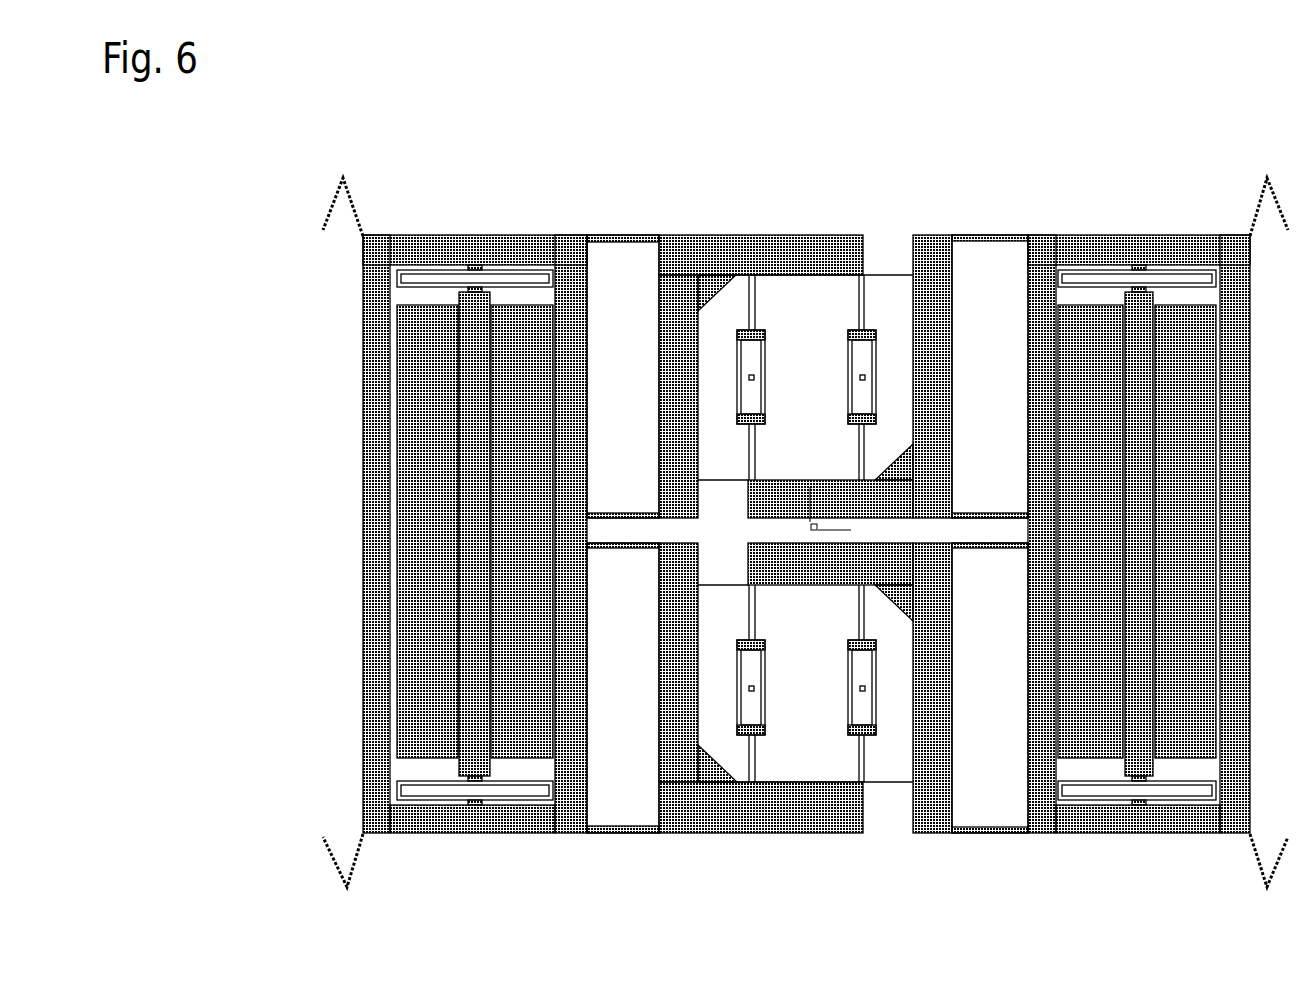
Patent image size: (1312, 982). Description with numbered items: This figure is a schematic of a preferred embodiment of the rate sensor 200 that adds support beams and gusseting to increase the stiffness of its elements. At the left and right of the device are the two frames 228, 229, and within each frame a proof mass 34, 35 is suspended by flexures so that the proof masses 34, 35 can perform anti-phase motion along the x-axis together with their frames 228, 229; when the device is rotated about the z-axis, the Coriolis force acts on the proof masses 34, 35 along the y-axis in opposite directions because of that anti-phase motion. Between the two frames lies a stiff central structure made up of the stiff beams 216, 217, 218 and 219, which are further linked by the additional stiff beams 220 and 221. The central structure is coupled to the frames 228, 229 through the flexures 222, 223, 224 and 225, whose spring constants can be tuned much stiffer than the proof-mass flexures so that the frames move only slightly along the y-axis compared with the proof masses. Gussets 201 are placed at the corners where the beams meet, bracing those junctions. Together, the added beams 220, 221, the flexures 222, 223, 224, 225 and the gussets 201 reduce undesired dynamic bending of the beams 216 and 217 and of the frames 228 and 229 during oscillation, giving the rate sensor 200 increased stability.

The rate sensor 200 is at (320, 143).
The gusset 201 is at (708, 288).
The stiff beam 216 is at (767, 492).
The stiff beam 217 is at (765, 571).
The stiff beam 218 is at (774, 254).
The stiff beam 219 is at (782, 812).
The stiff beam 220 is at (673, 333).
The stiff beam 221 is at (674, 727).
The flexure 222 is at (627, 512).
The flexure 223 is at (630, 549).
The flexure 224 is at (996, 512).
The flexure 225 is at (996, 548).
The frame 228 is at (507, 250).
The frame 229 is at (1107, 250).
The proof mass 34 is at (475, 534).
The proof mass 35 is at (1139, 534).